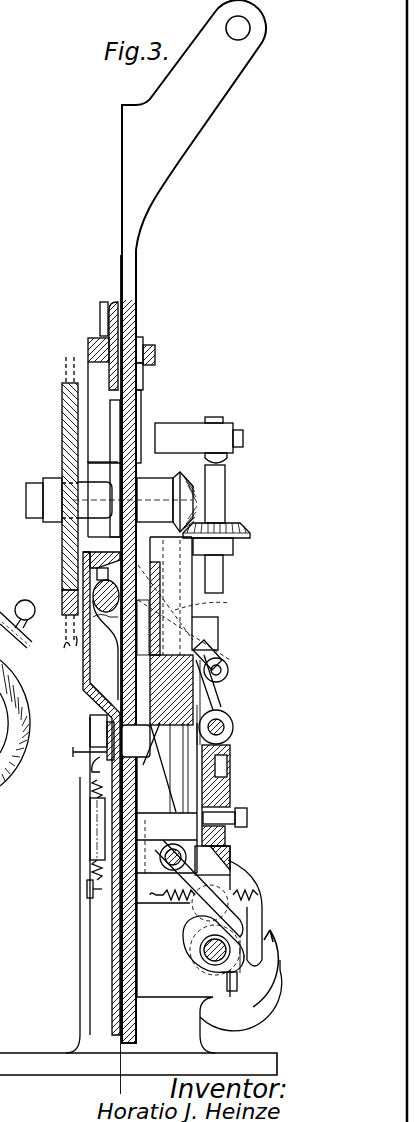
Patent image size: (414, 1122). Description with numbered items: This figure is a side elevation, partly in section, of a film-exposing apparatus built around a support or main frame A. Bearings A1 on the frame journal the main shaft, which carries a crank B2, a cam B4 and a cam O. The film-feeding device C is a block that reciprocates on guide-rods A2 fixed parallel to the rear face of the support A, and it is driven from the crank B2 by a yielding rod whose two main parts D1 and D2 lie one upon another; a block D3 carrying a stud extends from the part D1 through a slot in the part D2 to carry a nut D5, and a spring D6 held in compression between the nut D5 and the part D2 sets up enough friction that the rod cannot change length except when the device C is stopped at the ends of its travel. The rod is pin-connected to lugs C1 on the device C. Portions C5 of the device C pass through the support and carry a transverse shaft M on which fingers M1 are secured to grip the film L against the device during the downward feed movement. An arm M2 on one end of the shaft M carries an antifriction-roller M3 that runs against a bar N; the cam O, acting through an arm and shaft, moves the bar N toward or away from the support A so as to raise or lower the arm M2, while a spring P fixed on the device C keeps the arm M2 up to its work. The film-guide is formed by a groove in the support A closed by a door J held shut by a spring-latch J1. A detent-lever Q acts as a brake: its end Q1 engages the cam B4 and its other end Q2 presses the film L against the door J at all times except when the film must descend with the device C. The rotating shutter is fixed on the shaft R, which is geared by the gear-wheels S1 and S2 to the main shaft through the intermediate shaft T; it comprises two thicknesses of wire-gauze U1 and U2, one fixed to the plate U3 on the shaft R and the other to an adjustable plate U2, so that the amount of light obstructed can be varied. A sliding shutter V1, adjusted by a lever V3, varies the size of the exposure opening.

The support or main frame A is at (136, 277).
The film L is at (119, 277).
The door J is at (90, 340).
The lever V3 is at (147, 350).
The shutter V1 is at (141, 432).
The wire-gauze thickness U2 is at (63, 542).
The plate U3 is at (63, 604).
The wire-gauze thickness U1 is at (68, 650).
The shaft R is at (26, 500).
The gear-wheel S1 is at (194, 498).
The gear-wheel S2 is at (225, 528).
The intermediate shaft T is at (224, 572).
The portions of the film-feeding device C5 is at (171, 596).
The film-feeding device C is at (150, 606).
The guide-rods A2 is at (209, 605).
The spring P is at (220, 632).
The arm M2 is at (212, 655).
The bar N is at (229, 668).
The lugs C1 is at (220, 710).
The fingers M1 is at (98, 585).
The transverse shaft M is at (105, 640).
The antifriction-roller M3 is at (90, 688).
The spring-latch J1 is at (107, 750).
The end of detent-lever Q2 is at (136, 741).
The detent-lever Q is at (160, 860).
The part of yielding rod D1 is at (229, 748).
The block D3 is at (228, 770).
The spring D6 is at (228, 794).
The nut D5 is at (247, 818).
The part of yielding rod D2 is at (230, 858).
The crank B2 is at (250, 915).
The end of detent-lever Q1 is at (190, 910).
The bearings A1 is at (194, 950).
The cam B4 is at (190, 964).
The cam O is at (237, 983).